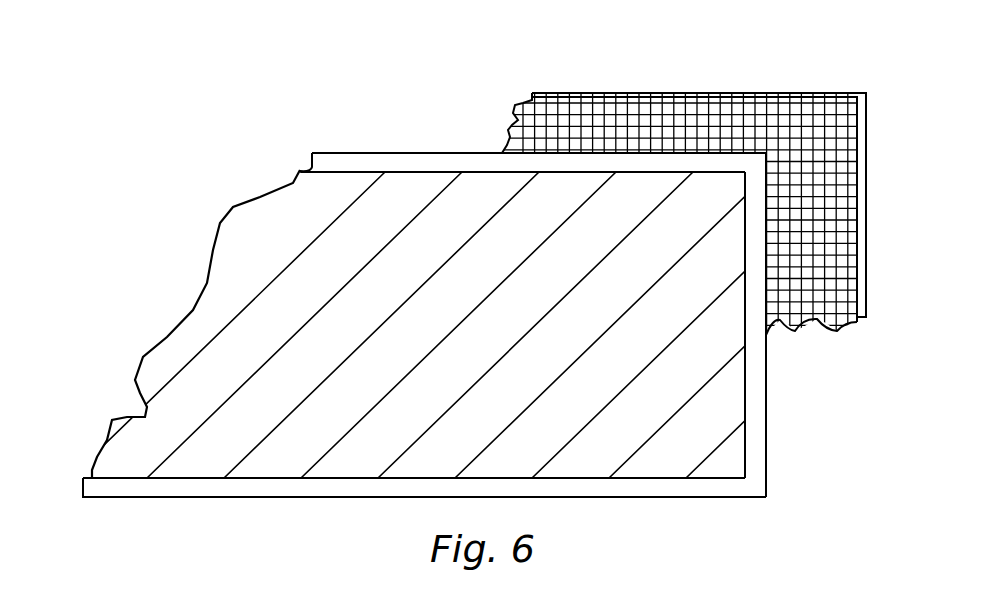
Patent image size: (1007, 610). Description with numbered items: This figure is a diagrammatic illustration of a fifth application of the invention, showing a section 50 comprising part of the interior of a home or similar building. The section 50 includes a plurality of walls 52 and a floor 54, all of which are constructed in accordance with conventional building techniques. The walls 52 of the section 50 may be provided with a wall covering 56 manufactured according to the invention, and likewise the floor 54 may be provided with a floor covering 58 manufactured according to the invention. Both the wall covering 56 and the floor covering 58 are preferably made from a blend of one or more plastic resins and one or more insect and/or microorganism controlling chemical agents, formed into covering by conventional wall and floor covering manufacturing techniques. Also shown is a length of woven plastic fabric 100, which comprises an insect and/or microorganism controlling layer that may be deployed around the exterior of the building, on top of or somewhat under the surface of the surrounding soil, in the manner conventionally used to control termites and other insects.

The section 50 is at (170, 237).
The walls 52 is at (410, 248).
The floor 54 is at (252, 485).
The wall covering 56 is at (645, 393).
The floor covering 58 is at (543, 478).
The woven plastic fabric 100 is at (625, 90).